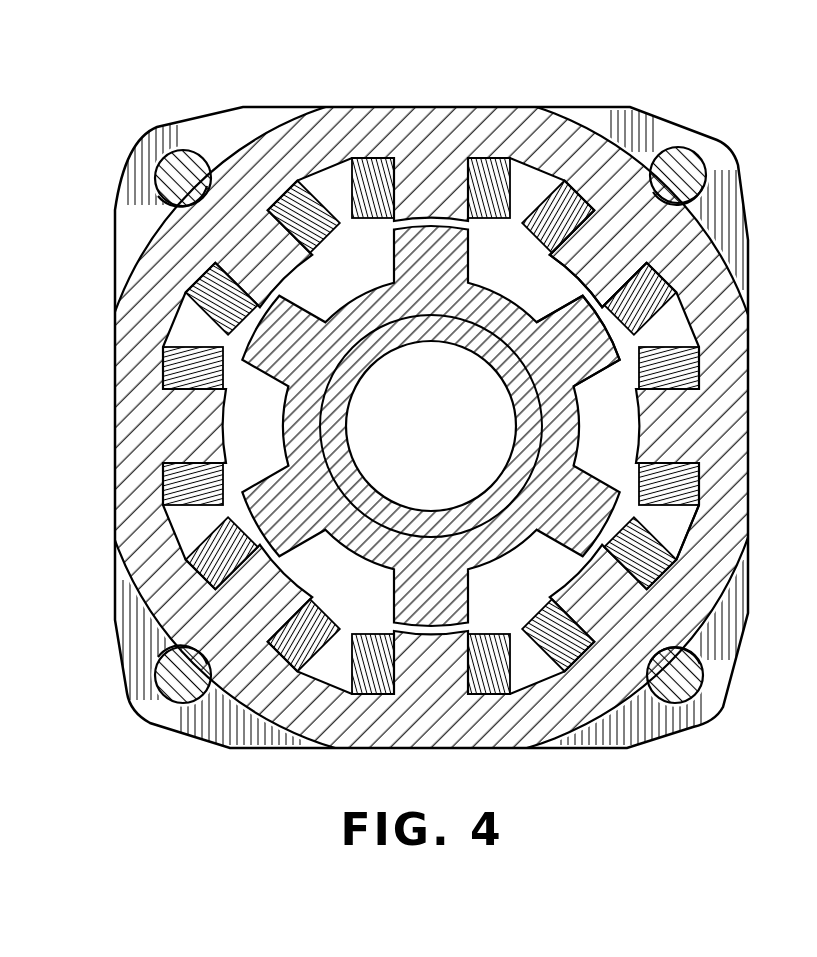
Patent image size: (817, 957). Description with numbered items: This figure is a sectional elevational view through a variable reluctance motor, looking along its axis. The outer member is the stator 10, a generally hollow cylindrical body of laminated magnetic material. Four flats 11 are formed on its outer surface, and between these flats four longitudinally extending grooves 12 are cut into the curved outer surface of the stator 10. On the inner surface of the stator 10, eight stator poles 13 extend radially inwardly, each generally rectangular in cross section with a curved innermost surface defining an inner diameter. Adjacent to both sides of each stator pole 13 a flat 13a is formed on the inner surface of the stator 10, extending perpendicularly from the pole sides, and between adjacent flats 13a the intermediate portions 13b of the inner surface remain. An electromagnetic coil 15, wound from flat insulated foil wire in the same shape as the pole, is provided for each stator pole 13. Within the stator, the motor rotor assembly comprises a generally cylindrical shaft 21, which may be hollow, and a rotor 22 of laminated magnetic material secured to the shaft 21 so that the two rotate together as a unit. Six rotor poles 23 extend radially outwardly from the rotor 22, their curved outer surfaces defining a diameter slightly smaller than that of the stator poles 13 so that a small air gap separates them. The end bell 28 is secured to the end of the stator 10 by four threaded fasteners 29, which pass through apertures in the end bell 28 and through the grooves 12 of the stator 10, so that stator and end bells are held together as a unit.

The stator 10 is at (343, 130).
The flats 11 is at (453, 107).
The grooves 12 is at (197, 170).
The stator poles 13 is at (575, 270).
The flat 13a is at (691, 478).
The intermediate portions 13b is at (679, 542).
The electromagnetic coil 15 is at (688, 363).
The shaft 21 is at (338, 421).
The rotor 22 is at (494, 318).
The rotor poles 23 is at (605, 358).
The end bell 28 is at (628, 130).
The threaded fasteners 29 is at (170, 168).